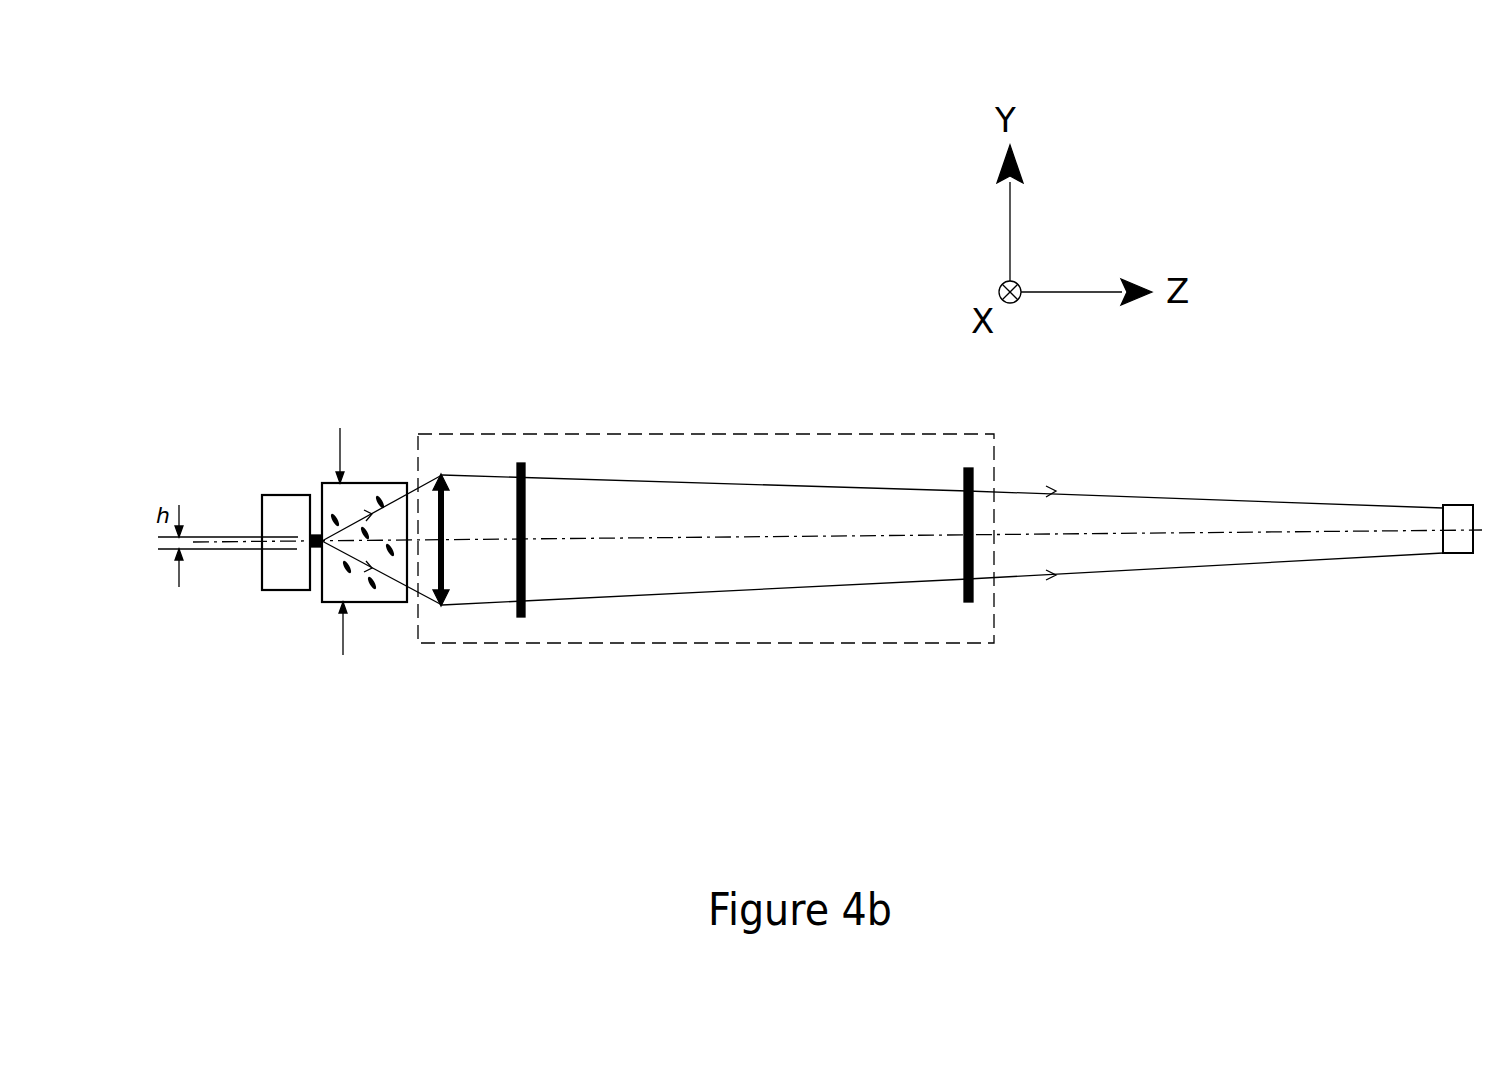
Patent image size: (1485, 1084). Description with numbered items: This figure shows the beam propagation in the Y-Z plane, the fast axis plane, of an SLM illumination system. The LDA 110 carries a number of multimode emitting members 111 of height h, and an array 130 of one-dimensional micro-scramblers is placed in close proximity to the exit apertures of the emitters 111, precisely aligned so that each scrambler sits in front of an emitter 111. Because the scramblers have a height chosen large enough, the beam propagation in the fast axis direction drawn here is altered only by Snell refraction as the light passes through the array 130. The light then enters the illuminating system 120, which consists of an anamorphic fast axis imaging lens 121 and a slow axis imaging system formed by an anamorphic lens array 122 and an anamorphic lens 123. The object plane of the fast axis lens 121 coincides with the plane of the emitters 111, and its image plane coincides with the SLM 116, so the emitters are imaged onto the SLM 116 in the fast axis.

The LDA 110 is at (288, 493).
The multimode emitting member 111 is at (310, 555).
The array of micro-scramblers 130 is at (375, 482).
The illuminating system 120 is at (726, 427).
The anamorphic fast axis imaging lens 121 is at (450, 512).
The anamorphic lens array 122 is at (522, 625).
The anamorphic lens 123 is at (968, 602).
The SLM 116 is at (1443, 510).